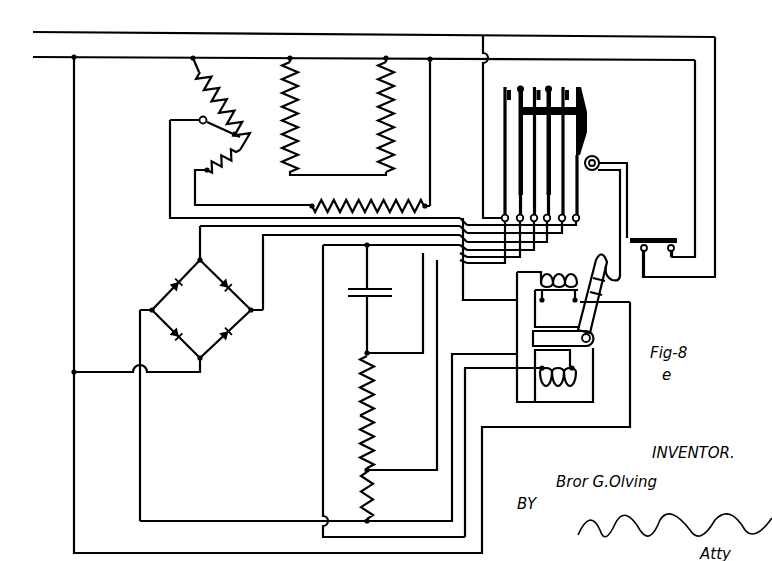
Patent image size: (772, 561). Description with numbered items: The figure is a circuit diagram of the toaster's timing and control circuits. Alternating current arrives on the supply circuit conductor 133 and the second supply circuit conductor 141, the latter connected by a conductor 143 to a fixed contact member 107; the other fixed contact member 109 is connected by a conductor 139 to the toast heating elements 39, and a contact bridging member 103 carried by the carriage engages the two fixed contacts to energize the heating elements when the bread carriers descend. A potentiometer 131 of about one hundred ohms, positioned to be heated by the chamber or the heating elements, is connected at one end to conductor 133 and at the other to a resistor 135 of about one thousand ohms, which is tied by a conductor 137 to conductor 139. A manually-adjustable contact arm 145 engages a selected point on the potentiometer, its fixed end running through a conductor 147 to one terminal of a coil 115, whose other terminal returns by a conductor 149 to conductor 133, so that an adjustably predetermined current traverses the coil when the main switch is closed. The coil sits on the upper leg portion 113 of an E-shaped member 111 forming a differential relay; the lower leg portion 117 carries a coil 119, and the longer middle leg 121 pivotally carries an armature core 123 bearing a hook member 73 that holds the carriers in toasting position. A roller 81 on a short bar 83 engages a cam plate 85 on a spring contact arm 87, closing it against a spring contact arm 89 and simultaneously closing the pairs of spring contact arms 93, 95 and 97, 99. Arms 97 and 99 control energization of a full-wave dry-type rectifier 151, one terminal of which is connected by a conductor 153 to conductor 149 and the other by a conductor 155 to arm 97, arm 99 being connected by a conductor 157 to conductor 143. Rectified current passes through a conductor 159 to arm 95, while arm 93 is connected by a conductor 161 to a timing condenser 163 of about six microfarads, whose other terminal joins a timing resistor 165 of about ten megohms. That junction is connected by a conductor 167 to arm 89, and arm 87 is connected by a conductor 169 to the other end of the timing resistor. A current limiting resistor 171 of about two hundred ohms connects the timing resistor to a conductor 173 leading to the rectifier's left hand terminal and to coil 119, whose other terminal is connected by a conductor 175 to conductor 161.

The toast heating elements 39 is at (378, 128).
The hook member 73 is at (609, 240).
The roller 81 is at (598, 156).
The short bar 83 is at (628, 174).
The cam plate 85 is at (588, 120).
The spring contact arm 87 is at (585, 92).
The spring contact arm 89 is at (578, 90).
The spring contact arm 93 is at (565, 92).
The spring contact arm 95 is at (560, 82).
The spring contact arm 97 is at (530, 80).
The spring contact arm 99 is at (503, 90).
The contact bridging member 103 is at (660, 236).
The fixed contact member 107 is at (643, 256).
The fixed contact member 109 is at (675, 250).
The E-shaped member 111 is at (516, 320).
The upper leg portion 113 is at (583, 268).
The coil 115 is at (557, 300).
The lower leg portion 117 is at (575, 398).
The coil 119 is at (537, 402).
The middle leg 121 is at (533, 337).
The armature core 123 is at (598, 322).
The potentiometer 131 is at (253, 177).
The A. C. supply circuit conductor 133 is at (48, 58).
The resistor 135 is at (318, 32).
The conductor 137 is at (430, 170).
The conductor 139 is at (662, 62).
The second supply circuit conductor 141 is at (48, 32).
The conductor 143 is at (654, 37).
The manually-adjustable contact arm 145 is at (219, 122).
The conductor 147 is at (170, 170).
The conductor 149 is at (73, 170).
The full-wave dry-type rectifier 151 is at (201, 293).
The conductor 153 is at (183, 378).
The conductor 155 is at (243, 229).
The conductor 157 is at (483, 140).
The conductor 159 is at (299, 237).
The conductor 161 is at (313, 363).
The timing condenser 163 is at (363, 298).
The timing resistor 165 is at (449, 35).
The conductor 167 is at (423, 327).
The conductor 169 is at (396, 468).
The current limiting resistor 171 is at (583, 1).
The conductor 173 is at (181, 521).
The conductor 175 is at (465, 393).